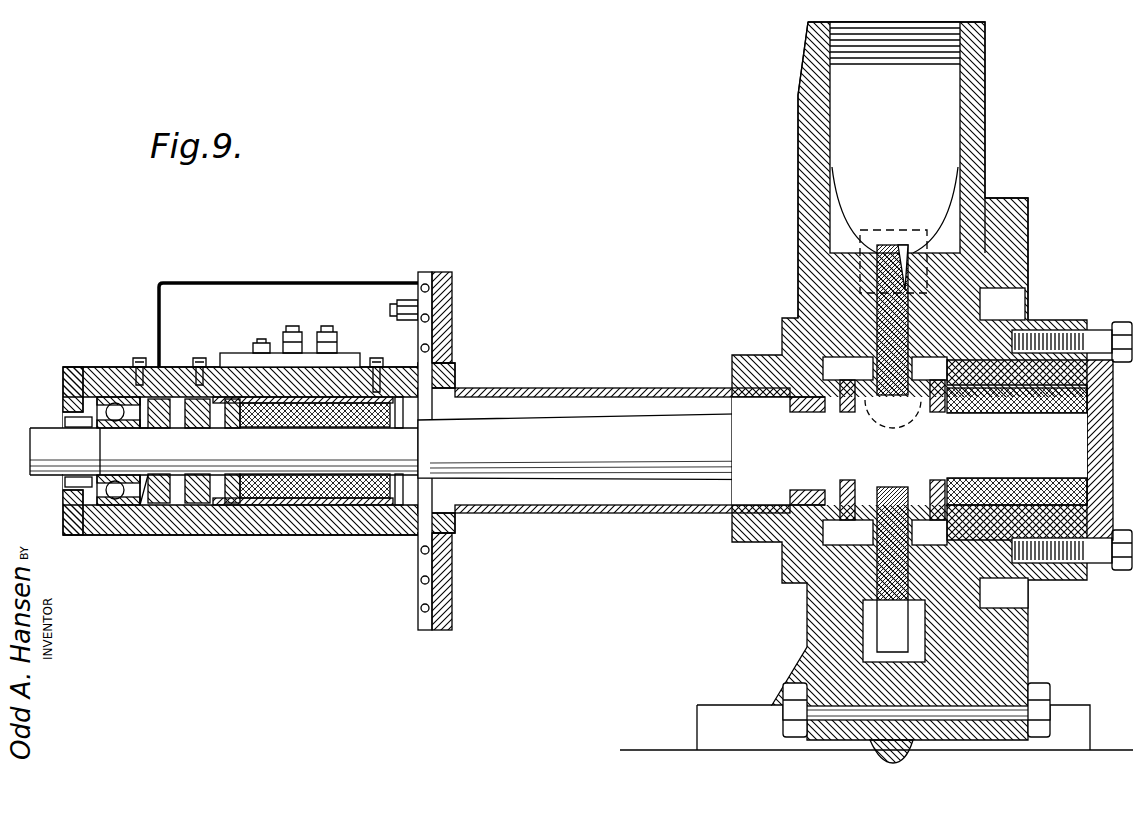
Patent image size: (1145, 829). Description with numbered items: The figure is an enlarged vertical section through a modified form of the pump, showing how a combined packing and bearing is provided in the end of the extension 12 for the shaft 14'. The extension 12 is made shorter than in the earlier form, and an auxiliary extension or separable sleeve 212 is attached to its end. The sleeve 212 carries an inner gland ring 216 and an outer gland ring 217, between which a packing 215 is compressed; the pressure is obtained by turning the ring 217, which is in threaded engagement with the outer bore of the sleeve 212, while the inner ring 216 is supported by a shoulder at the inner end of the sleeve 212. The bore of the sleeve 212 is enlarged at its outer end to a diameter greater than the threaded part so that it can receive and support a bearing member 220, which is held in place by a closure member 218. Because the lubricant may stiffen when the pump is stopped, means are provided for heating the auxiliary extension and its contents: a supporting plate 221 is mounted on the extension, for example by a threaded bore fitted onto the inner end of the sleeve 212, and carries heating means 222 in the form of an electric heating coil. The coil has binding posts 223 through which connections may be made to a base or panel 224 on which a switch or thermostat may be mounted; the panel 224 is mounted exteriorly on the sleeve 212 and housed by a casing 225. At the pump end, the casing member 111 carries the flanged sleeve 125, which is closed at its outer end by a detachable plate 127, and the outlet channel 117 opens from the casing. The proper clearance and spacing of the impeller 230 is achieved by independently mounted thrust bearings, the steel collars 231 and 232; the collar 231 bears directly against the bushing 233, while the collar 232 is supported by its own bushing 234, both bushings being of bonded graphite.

The extension 12 is at (613, 388).
The shaft 14' is at (752, 418).
The casing member 111 is at (1028, 240).
The outlet channel 117 is at (948, 133).
The flanged sleeve 125 is at (1080, 322).
The detachable plate 127 is at (1110, 320).
The separable sleeve 212 is at (275, 540).
The packing 215 is at (245, 522).
The inner gland ring 216 is at (358, 503).
The outer gland ring 217 is at (180, 530).
The closure member 218 is at (73, 537).
The bearing member 220 is at (115, 537).
The supporting plate 221 is at (440, 271).
The heating means 222 is at (442, 242).
The binding posts 223 is at (408, 300).
The panel 224 is at (243, 352).
The casing 225 is at (315, 252).
The impeller 230 is at (903, 262).
The thrust bearing collar 231 is at (947, 412).
The thrust bearing collar 232 is at (850, 413).
The bushing 233 is at (1030, 450).
The bushing 234 is at (800, 505).